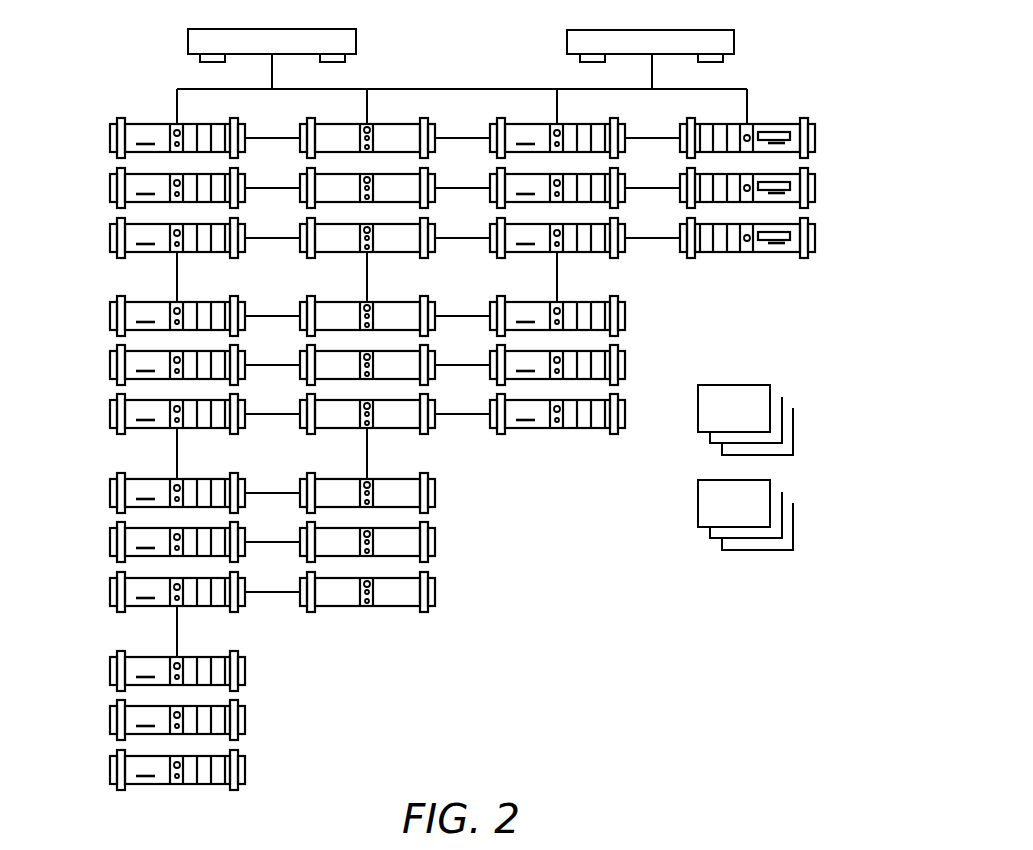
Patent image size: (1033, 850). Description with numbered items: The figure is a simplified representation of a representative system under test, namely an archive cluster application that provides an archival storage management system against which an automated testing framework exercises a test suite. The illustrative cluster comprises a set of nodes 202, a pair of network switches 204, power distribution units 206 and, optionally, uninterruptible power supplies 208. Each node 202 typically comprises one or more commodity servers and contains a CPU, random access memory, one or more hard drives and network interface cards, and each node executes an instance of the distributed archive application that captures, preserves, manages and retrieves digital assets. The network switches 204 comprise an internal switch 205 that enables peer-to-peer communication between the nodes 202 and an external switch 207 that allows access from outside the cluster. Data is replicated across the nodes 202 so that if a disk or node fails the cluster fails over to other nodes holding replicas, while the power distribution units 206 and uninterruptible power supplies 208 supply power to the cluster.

The nodes 202 is at (86, 794).
The network switches 204 is at (795, 82).
The internal switch 205 is at (188, 47).
The power distribution units 206 is at (732, 385).
The external switch 207 is at (734, 40).
The uninterruptible power supplies 208 is at (757, 552).